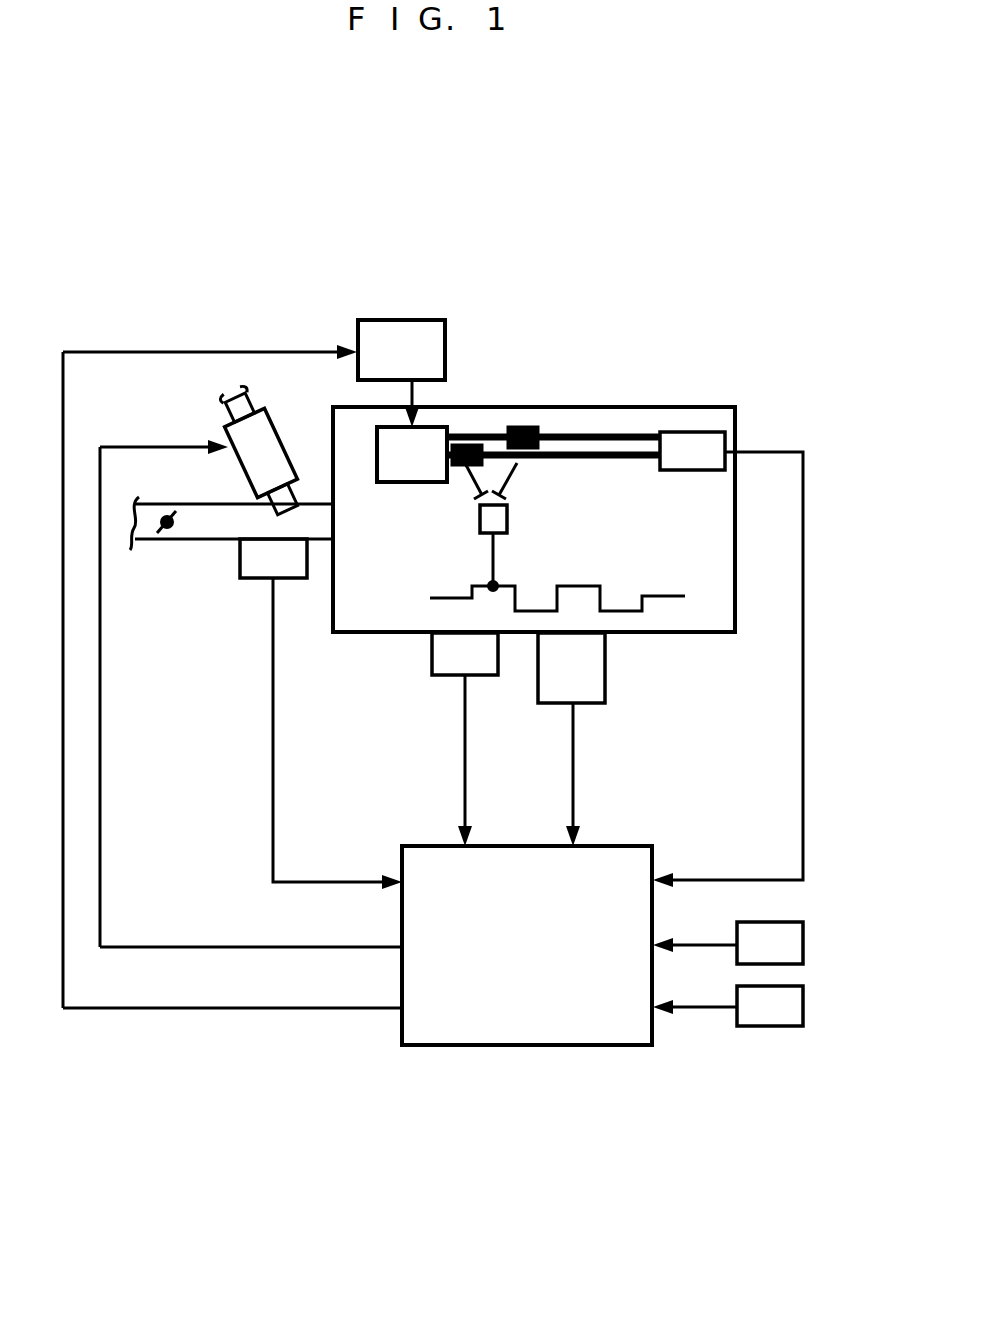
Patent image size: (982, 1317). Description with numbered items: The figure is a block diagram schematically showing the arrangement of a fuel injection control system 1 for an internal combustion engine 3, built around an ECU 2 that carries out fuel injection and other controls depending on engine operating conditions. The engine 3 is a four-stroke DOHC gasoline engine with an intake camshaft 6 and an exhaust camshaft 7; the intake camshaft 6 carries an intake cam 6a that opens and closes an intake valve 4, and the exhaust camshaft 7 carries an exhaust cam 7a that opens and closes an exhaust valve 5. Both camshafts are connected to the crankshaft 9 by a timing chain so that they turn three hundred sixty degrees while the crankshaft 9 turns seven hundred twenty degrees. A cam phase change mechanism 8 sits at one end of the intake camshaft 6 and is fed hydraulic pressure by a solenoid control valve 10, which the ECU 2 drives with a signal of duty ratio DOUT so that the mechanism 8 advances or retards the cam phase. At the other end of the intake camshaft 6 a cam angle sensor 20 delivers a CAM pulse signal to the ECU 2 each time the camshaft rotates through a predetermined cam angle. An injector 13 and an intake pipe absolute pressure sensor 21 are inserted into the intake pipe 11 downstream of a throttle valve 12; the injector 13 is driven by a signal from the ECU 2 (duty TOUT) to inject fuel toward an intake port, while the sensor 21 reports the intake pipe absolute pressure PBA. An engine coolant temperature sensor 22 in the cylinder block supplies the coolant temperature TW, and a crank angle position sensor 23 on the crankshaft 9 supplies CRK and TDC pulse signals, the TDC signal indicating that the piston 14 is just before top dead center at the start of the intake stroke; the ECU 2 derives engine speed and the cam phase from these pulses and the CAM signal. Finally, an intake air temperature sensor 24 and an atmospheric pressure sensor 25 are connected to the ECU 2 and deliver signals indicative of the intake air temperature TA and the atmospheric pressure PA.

The fuel injection control system 1 is at (506, 1148).
The ECU 2 is at (402, 1033).
The internal combustion engine 3 is at (633, 407).
The intake valve 4 is at (468, 483).
The exhaust valve 5 is at (518, 483).
The intake camshaft 6 is at (592, 463).
The intake cam 6a is at (463, 445).
The exhaust camshaft 7 is at (597, 432).
The exhaust cam 7a is at (520, 427).
The cam phase change mechanism 8 is at (385, 482).
The crankshaft 9 is at (650, 587).
The solenoid control valve 10 is at (410, 320).
The intake pipe 11 is at (192, 539).
The throttle valve 12 is at (168, 513).
The injector 13 is at (285, 430).
The piston 14 is at (508, 522).
The cam angle sensor 20 is at (688, 432).
The intake pipe absolute pressure sensor 21 is at (262, 578).
The engine coolant temperature sensor 22 is at (447, 675).
The crank angle position sensor 23 is at (597, 703).
The intake air temperature sensor 24 is at (803, 952).
The atmospheric pressure sensor 25 is at (803, 1017).